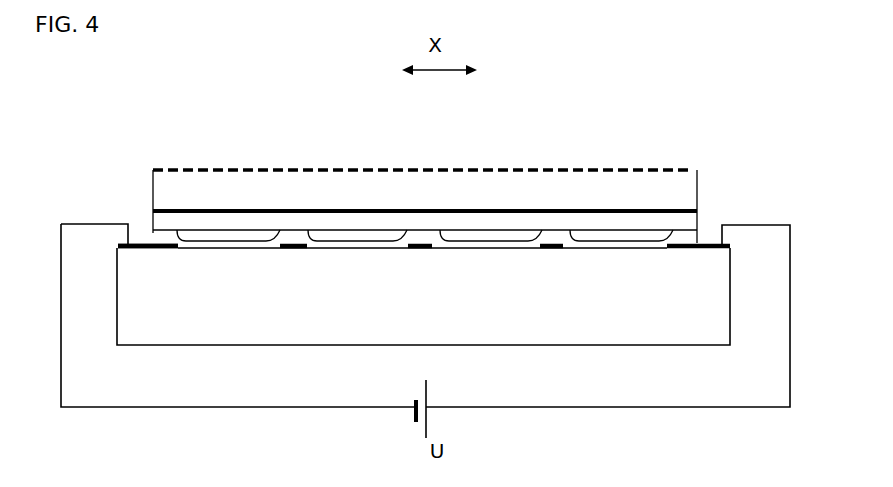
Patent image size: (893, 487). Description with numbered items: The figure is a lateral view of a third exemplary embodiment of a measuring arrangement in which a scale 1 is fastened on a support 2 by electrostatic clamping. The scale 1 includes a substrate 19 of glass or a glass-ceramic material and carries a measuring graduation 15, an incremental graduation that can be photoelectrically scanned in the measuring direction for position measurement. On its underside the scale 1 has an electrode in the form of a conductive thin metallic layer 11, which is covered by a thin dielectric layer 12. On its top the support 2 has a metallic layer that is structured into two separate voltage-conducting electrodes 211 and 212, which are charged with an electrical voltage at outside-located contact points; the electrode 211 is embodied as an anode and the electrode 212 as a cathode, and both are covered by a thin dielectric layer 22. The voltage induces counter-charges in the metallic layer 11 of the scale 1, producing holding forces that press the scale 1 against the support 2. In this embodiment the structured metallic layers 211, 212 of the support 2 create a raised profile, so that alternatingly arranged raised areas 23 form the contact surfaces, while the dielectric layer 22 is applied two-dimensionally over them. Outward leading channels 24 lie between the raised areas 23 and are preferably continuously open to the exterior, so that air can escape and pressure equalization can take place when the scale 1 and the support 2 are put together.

The scale 1 is at (448, 288).
The support 2 is at (718, 330).
The metallic layer 11 is at (178, 207).
The dielectric layer 12 is at (548, 220).
The measuring graduation 15 is at (260, 168).
The substrate 19 is at (640, 193).
The dielectric layer 22 is at (160, 236).
The raised areas 23 is at (297, 230).
The channels 24 is at (250, 233).
The electrode 211 is at (172, 249).
The electrode 212 is at (682, 249).